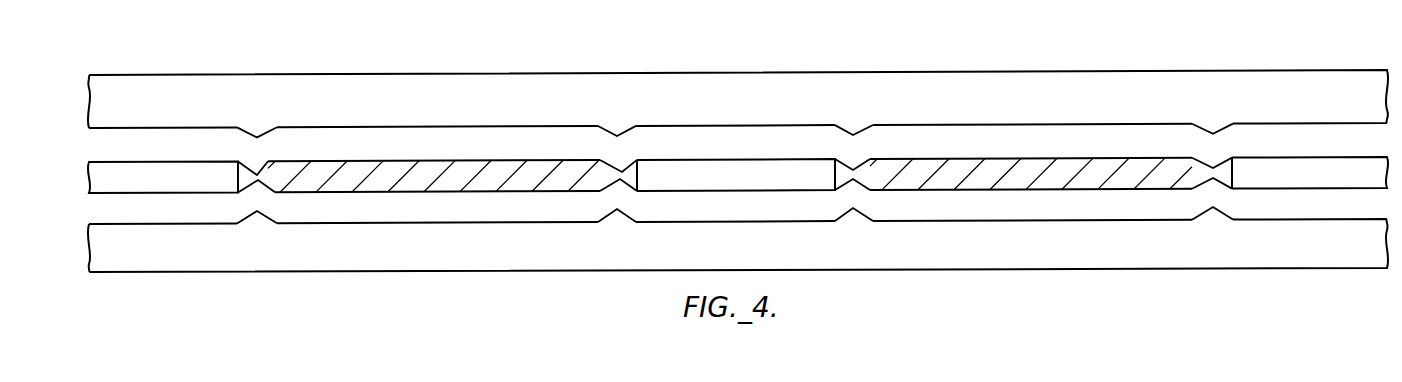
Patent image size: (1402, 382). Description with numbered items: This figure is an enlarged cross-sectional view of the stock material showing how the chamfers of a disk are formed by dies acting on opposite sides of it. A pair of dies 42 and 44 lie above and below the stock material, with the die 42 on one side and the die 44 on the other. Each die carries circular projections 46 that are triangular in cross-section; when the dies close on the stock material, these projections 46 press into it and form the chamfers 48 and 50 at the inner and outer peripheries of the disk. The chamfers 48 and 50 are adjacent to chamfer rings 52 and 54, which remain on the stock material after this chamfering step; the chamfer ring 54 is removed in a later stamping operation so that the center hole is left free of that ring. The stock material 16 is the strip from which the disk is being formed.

The conductor wire 16 is at (158, 197).
The die 42 is at (327, 87).
The die 44 is at (315, 268).
The circular projections 46 is at (267, 137).
The chamfer 48 is at (611, 162).
The chamfer 50 is at (262, 187).
The chamfer ring 52 is at (248, 162).
The chamfer ring 54 is at (622, 185).